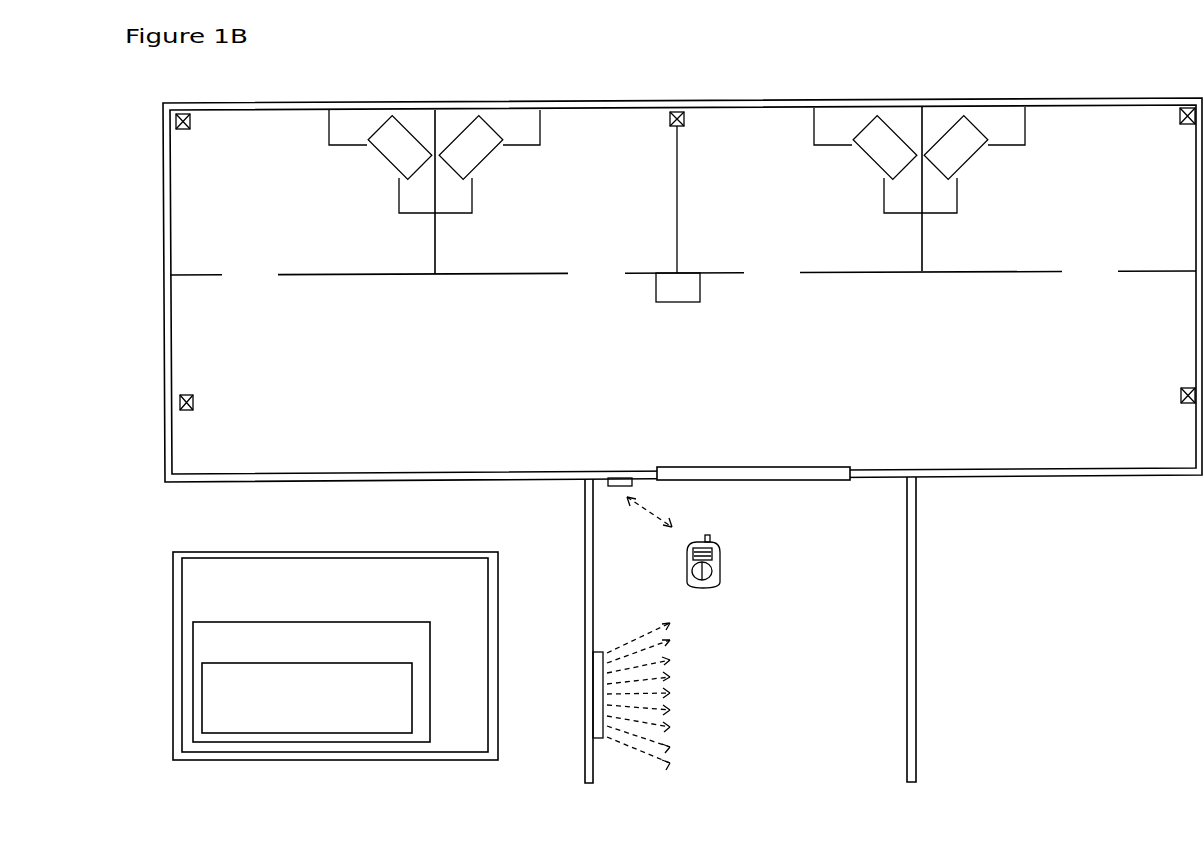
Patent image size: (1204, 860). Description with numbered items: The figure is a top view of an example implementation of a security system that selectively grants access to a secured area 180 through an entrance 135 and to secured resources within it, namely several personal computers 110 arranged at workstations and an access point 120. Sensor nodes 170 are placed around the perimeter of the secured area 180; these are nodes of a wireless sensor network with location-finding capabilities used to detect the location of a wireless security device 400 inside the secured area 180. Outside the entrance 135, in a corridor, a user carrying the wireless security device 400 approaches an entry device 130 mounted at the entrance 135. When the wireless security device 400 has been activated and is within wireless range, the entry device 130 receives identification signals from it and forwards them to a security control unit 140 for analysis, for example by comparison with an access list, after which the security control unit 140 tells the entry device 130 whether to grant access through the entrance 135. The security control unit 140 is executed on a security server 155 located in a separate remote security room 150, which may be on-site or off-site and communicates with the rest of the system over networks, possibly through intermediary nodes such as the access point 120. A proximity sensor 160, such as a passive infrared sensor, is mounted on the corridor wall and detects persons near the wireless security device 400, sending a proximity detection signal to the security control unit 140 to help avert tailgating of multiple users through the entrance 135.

The personal computers 110 is at (396, 176).
The access point 120 is at (684, 303).
The entry device 130 is at (623, 472).
The entrance 135 is at (792, 467).
The security control unit 140 is at (398, 721).
The remote security room 150 is at (478, 597).
The security server 155 is at (420, 657).
The proximity sensor 160 is at (597, 740).
The sensor nodes 170 is at (184, 130).
The secured area 180 is at (955, 364).
The wireless security device 400 is at (718, 565).